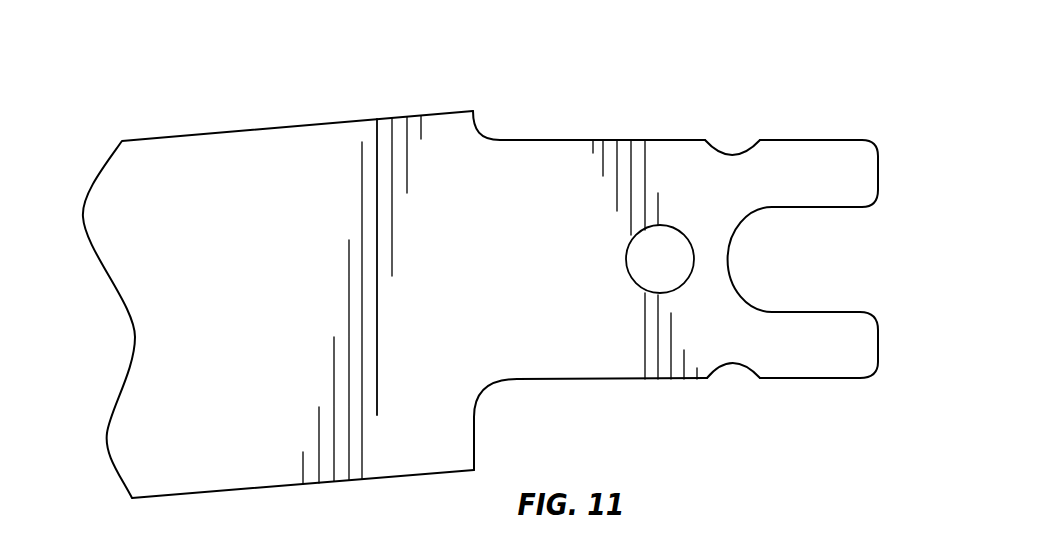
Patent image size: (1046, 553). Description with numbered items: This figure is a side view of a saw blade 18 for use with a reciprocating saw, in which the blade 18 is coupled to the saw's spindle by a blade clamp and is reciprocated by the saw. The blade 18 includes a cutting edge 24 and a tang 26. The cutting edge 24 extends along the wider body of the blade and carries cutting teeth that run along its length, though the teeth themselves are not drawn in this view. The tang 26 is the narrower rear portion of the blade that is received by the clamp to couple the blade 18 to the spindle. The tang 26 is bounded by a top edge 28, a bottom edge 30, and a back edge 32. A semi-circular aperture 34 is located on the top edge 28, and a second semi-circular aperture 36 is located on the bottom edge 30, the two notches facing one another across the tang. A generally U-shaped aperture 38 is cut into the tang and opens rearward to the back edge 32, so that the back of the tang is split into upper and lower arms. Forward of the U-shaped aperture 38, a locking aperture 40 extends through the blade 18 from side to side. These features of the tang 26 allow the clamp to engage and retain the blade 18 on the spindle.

The blade 18 is at (493, 275).
The cutting edge 24 is at (412, 478).
The tang 26 is at (669, 157).
The top edge 28 is at (584, 140).
The bottom edge 30 is at (593, 380).
The back edge 32 is at (880, 160).
The semi-circular aperture 34 is at (742, 152).
The semi-circular aperture 36 is at (740, 368).
The U-shaped aperture 38 is at (788, 312).
The locking aperture 40 is at (678, 236).